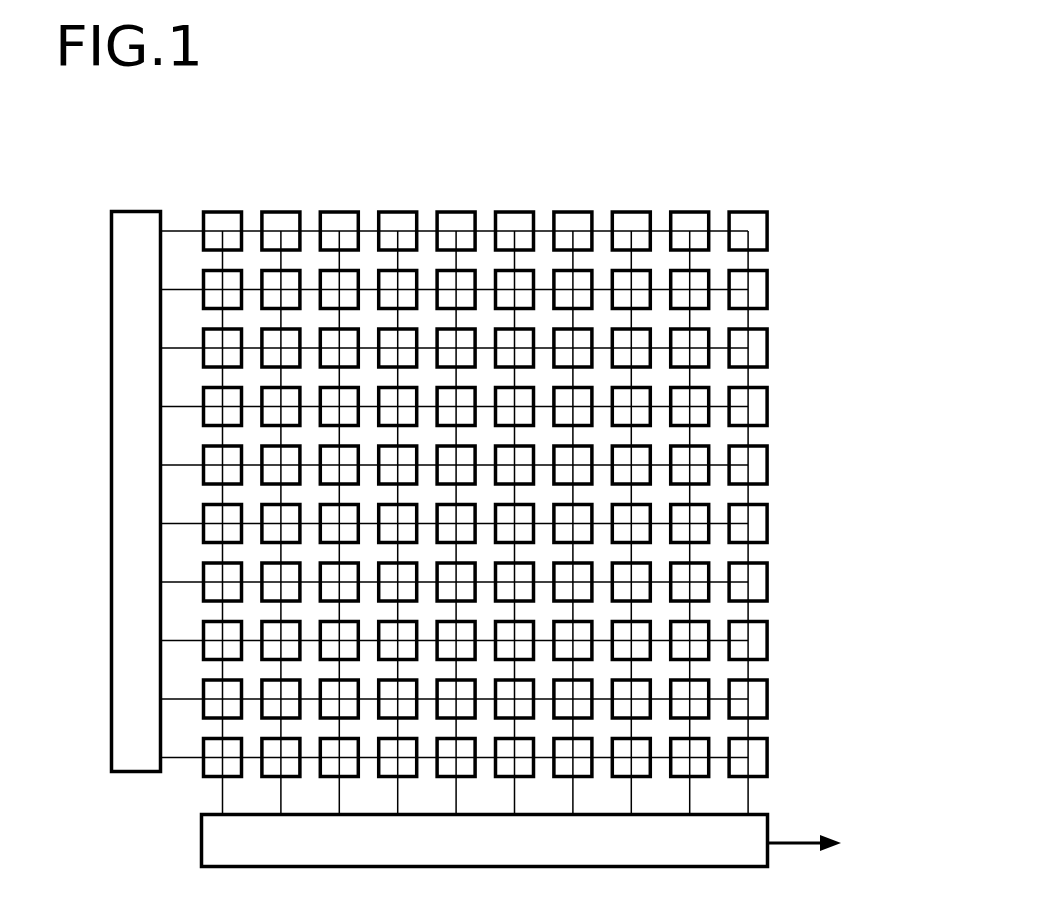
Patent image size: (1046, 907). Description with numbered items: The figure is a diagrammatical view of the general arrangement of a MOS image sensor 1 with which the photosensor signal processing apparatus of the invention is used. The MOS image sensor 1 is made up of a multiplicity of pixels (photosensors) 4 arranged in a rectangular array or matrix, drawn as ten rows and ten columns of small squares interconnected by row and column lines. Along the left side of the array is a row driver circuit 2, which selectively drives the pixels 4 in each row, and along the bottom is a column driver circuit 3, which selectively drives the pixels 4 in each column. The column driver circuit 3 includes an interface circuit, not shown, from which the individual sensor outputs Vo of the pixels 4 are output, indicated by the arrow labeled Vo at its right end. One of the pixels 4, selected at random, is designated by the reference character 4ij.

The MOS image sensor 1 is at (476, 191).
The row driver circuit 2 is at (137, 210).
The column driver circuit 3 is at (200, 835).
The pixels (photosensors) 4 is at (769, 231).
The pixel selected at random 4ij is at (458, 463).